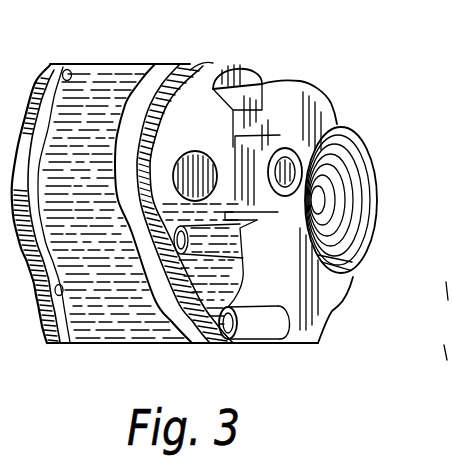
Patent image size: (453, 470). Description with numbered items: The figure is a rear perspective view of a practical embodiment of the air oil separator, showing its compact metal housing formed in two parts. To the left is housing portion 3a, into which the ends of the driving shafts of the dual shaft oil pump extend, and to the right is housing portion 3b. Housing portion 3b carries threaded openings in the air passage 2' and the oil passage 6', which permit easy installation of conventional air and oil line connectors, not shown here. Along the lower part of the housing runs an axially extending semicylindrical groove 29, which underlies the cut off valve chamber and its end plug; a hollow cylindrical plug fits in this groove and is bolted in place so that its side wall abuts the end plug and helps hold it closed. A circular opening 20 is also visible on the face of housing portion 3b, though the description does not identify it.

The housing portion 3a is at (115, 343).
The housing portion 3b is at (203, 67).
The bore hole 20 is at (213, 152).
The air passage 2' is at (286, 141).
The oil passage 6' is at (354, 200).
The semicylindrical groove 29 is at (272, 323).